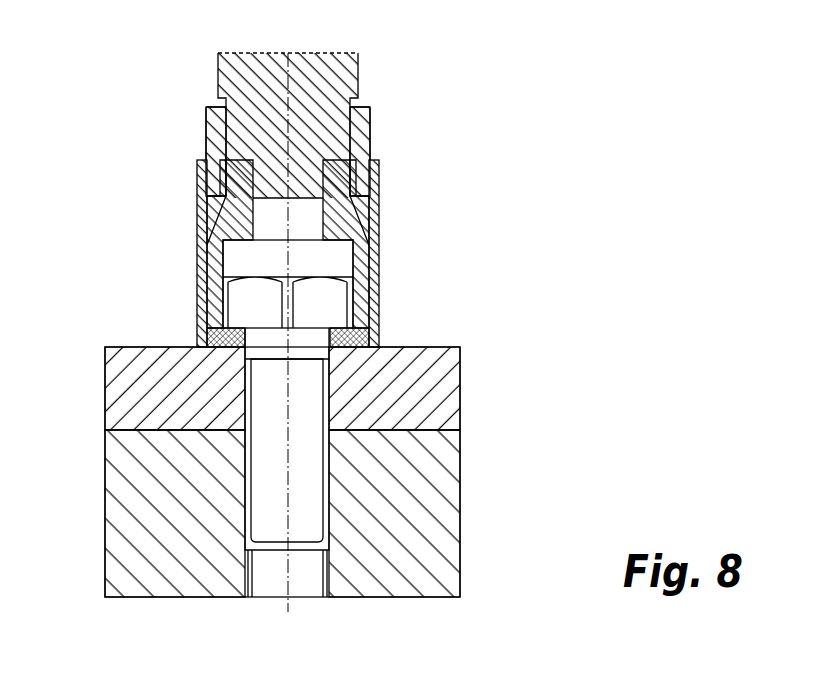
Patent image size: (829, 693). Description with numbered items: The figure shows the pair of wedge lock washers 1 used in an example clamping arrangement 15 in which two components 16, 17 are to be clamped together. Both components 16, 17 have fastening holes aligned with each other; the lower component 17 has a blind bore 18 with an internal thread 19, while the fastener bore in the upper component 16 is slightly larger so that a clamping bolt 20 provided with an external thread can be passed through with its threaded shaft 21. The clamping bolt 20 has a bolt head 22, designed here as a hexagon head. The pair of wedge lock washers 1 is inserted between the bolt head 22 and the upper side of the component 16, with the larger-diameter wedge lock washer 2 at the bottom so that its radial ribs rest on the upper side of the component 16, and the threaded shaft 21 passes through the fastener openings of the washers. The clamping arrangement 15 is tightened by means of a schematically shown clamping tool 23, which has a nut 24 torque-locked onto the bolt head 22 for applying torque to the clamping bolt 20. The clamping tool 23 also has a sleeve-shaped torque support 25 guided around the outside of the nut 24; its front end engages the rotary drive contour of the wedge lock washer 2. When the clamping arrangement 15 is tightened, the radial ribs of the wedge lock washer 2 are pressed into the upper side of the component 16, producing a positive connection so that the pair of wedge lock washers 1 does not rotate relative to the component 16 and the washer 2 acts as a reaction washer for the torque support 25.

The pair of wedge lock washers 1 is at (207, 323).
The wedge lock washer 2 is at (368, 331).
The clamping arrangement 15 is at (422, 463).
The component 16 is at (407, 400).
The component 17 is at (407, 525).
The blind bore 18 is at (281, 598).
The internal thread 19 is at (252, 574).
The clamping bolt 20 is at (233, 356).
The threaded shaft 21 is at (272, 519).
The bolt head 22 is at (298, 312).
The clamping tool 23 is at (172, 162).
The nut 24 is at (368, 223).
The torque support 25 is at (392, 272).